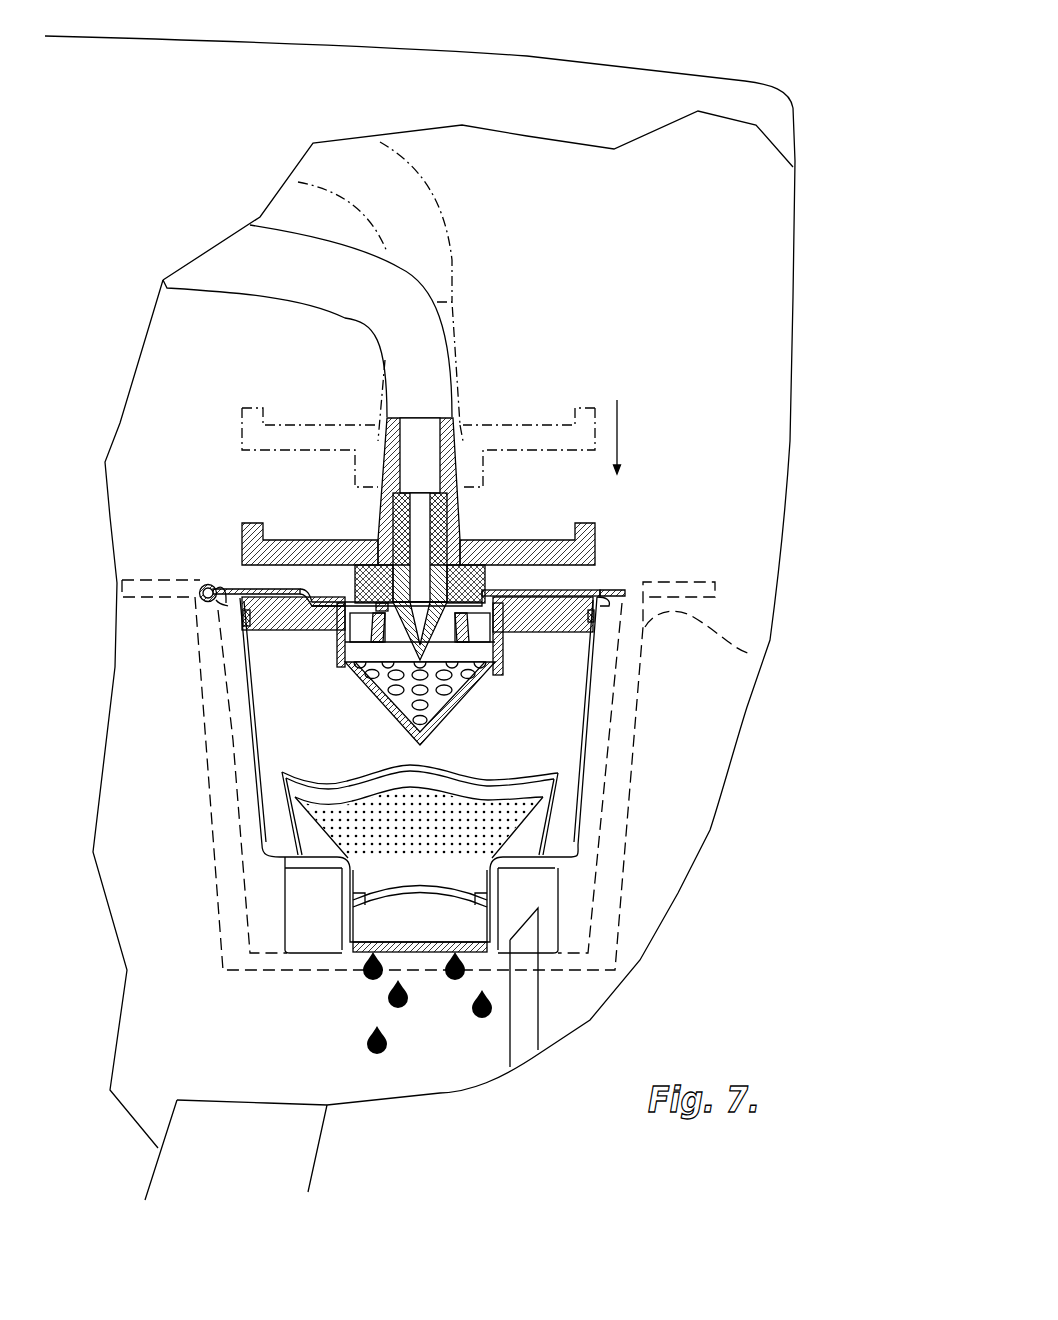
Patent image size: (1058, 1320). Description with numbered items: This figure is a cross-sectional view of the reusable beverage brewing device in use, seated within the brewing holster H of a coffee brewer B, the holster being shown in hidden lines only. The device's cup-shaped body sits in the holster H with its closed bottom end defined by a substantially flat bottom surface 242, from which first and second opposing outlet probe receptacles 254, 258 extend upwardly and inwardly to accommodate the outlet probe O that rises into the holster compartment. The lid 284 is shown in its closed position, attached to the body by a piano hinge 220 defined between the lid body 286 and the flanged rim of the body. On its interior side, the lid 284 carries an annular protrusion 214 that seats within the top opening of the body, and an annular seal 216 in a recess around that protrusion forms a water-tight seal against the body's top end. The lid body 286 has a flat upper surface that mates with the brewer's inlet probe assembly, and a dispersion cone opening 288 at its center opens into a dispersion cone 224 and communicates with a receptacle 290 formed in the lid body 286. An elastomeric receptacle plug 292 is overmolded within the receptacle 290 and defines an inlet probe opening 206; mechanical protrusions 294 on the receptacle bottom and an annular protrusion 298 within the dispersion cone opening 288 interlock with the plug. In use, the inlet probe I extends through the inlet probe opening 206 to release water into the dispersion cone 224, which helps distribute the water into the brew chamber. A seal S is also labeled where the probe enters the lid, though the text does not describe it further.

The coffee brewer B is at (663, 72).
The inlet probe I is at (465, 497).
The inlet probe opening 206 is at (462, 605).
The seal S is at (387, 607).
The receptacle 290 is at (312, 600).
The lid 284 is at (238, 584).
The receptacle plug 292 is at (523, 596).
The lid body 286 is at (620, 592).
The piano hinge 220 is at (203, 583).
The annular seal 216 is at (243, 614).
The mechanical protrusions 294 is at (540, 625).
The annular protrusion 298 is at (492, 622).
The dispersion cone 224 is at (477, 694).
The dispersion cone opening 288 is at (393, 613).
The annular protrusion 214 is at (243, 630).
The first outlet probe receptacle 254 is at (318, 894).
The second outlet probe receptacle 258 is at (536, 886).
The bottom surface 242 is at (477, 953).
The outlet probe O is at (513, 1043).
The brewing holster H is at (753, 654).